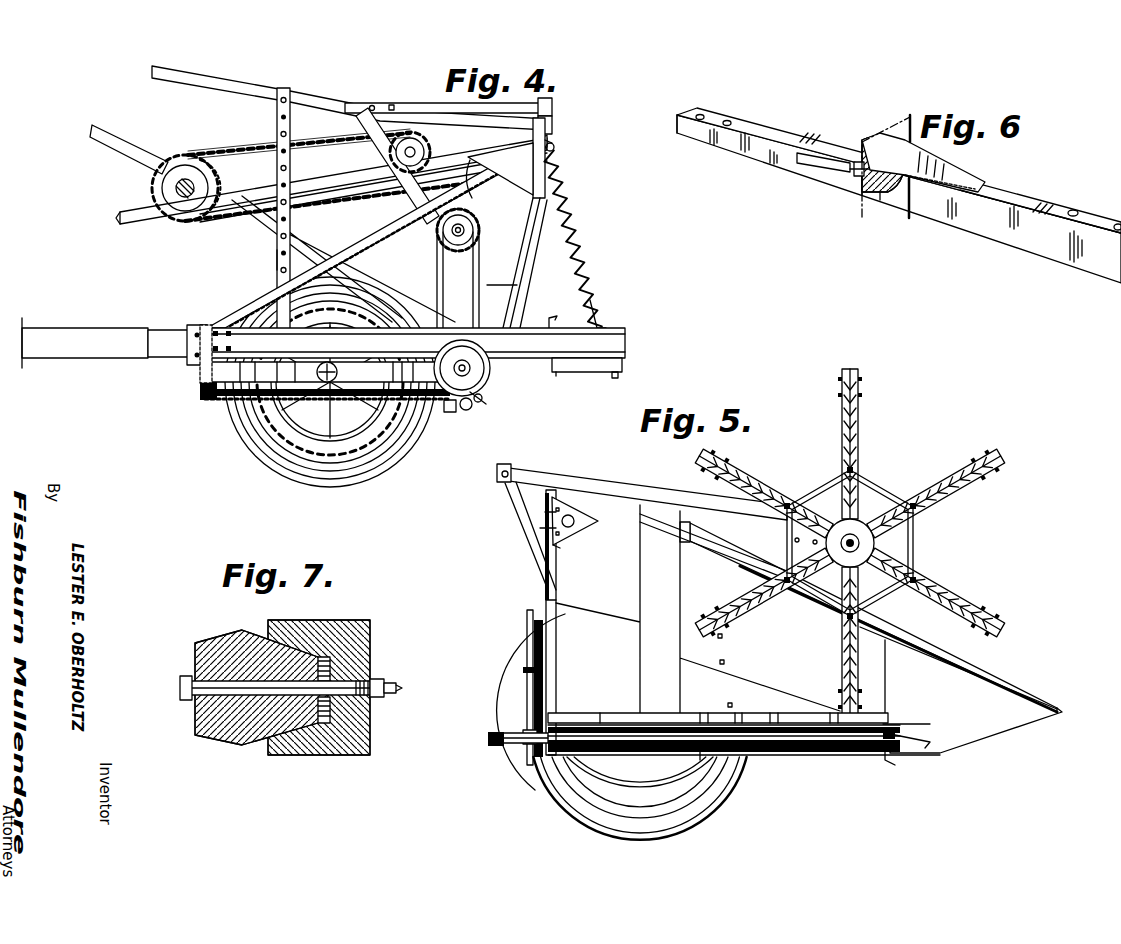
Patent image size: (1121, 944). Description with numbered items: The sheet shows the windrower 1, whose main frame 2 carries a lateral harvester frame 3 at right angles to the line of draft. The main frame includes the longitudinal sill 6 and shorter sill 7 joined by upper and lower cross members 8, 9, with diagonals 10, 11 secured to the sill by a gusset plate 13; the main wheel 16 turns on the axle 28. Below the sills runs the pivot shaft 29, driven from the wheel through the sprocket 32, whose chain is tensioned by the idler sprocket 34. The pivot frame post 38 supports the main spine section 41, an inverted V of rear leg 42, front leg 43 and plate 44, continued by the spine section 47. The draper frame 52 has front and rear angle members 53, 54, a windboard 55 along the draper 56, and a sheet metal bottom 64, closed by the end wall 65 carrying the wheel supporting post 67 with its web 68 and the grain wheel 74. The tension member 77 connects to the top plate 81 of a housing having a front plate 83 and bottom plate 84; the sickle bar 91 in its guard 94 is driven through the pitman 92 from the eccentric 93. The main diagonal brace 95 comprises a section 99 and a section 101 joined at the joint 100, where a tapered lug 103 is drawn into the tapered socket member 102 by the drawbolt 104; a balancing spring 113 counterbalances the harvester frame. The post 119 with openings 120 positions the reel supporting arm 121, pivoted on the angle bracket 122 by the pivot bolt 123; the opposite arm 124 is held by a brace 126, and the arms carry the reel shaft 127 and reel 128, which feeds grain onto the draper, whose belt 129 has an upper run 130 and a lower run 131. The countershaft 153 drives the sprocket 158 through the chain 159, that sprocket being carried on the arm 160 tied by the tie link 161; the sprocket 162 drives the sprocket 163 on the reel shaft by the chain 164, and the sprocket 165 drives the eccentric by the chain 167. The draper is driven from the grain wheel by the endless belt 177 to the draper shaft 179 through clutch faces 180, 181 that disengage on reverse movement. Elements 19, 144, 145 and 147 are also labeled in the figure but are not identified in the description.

In FIG. 4, the windrower 1 is at (277, 258).
In FIG. 4, the main frame 2 is at (503, 312).
In FIG. 4, the lateral harvester frame 3 is at (545, 150).
In FIG. 5, the lateral harvester frame 3 is at (546, 500).
In FIG. 4, the longitudinal sill 6 is at (158, 358).
In FIG. 6, the shorter sill 7 is at (860, 238).
In FIG. 4, the upper cross member 8 is at (548, 326).
In FIG. 4, the lower cross member 9 is at (552, 366).
In FIG. 4, the diagonal 10 is at (570, 368).
In FIG. 4, the diagonal 11 is at (338, 312).
In FIG. 4, the gusset plate 13 is at (190, 326).
In FIG. 4, the main wheel 16 is at (236, 432).
In FIG. 4, the tongue 19 is at (92, 357).
In FIG. 4, the axle 28 is at (350, 370).
In FIG. 4, the pivot shaft 29 is at (490, 372).
In FIG. 4, the sprocket 32 is at (333, 420).
In FIG. 4, the idler sprocket 34 is at (458, 402).
In FIG. 4, the post member 38 is at (520, 278).
In FIG. 4, the main spine section 41 is at (552, 152).
In FIG. 4, the rear leg 42 is at (556, 186).
In FIG. 5, the rear leg 42 is at (540, 530).
In FIG. 4, the front leg 43 is at (500, 169).
In FIG. 5, the front leg 43 is at (592, 518).
In FIG. 4, the plate 44 is at (472, 200).
In FIG. 5, the plate 44 is at (558, 546).
In FIG. 5, the continuing spine section 47 is at (545, 515).
In FIG. 5, the draper frame 52 is at (815, 755).
In FIG. 5, the front angle member 53 is at (888, 757).
In FIG. 5, the rear angle member 54 is at (535, 770).
In FIG. 5, the windboard 55 is at (546, 600).
In FIG. 5, the draper 56 is at (775, 725).
In FIG. 5, the sheet metal bottom 64 is at (740, 760).
In FIG. 5, the end wall 65 is at (630, 674).
In FIG. 5, the wheel supporting post 67 is at (600, 712).
In FIG. 5, the web 68 is at (922, 642).
In FIG. 5, the grain wheel 74 is at (720, 800).
In FIG. 4, the tension member 77 is at (380, 235).
In FIG. 4, the top plate 81 is at (238, 300).
In FIG. 4, the front plate 83 is at (200, 390).
In FIG. 4, the bottom plate 84 is at (215, 400).
In FIG. 5, the sickle bar 91 is at (915, 725).
In FIG. 4, the pitman 92 is at (475, 410).
In FIG. 4, the eccentric 93 is at (490, 395).
In FIG. 5, the guard 94 is at (915, 738).
In FIG. 6, the main diagonal brace 95 is at (940, 226).
In FIG. 6, the brace section 99 is at (750, 160).
In FIG. 6, the joint 100 is at (880, 202).
In FIG. 6, the brace section 101 is at (1030, 245).
In FIG. 6, the tapered socket member 102 is at (935, 160).
In FIG. 7, the tapered socket member 102 is at (360, 620).
In FIG. 6, the tapered lug 103 is at (858, 188).
In FIG. 7, the tapered lug 103 is at (250, 632).
In FIG. 6, the drawbolt 104 is at (852, 172).
In FIG. 7, the drawbolt 104 is at (402, 686).
In FIG. 4, the balancing spring 113 is at (597, 300).
In FIG. 4, the post 119 is at (277, 127).
In FIG. 4, the openings 120 is at (277, 175).
In FIG. 4, the reel supporting arm 121 is at (120, 226).
In FIG. 4, the angle bracket 122 is at (553, 110).
In FIG. 4, the pivot bolt 123 is at (553, 128).
In FIG. 5, the arm 124 is at (640, 500).
In FIG. 5, the brace 126 is at (505, 493).
In FIG. 4, the reel shaft 127 is at (213, 183).
In FIG. 5, the reel shaft 127 is at (858, 548).
In FIG. 5, the reel 128 is at (917, 510).
In FIG. 5, the belt 129 is at (700, 713).
In FIG. 5, the upper run 130 is at (820, 727).
In FIG. 5, the lower run 131 is at (785, 760).
In FIG. 4, the bar 144 is at (232, 88).
In FIG. 4, the bar 145 is at (128, 146).
In FIG. 4, the chain 147 is at (360, 196).
In FIG. 4, the countershaft 153 is at (520, 245).
In FIG. 4, the sprocket 158 is at (390, 155).
In FIG. 4, the chain 159 is at (437, 238).
In FIG. 4, the arm 160 is at (370, 132).
In FIG. 4, the tie link 161 is at (398, 108).
In FIG. 4, the sprocket 162 is at (350, 168).
In FIG. 4, the sprocket 163 is at (160, 188).
In FIG. 4, the chain 164 is at (240, 150).
In FIG. 4, the sprocket 165 is at (478, 236).
In FIG. 4, the chain 167 is at (518, 288).
In FIG. 5, the endless belt 177 is at (548, 648).
In FIG. 5, the draper shaft 179 is at (535, 718).
In FIG. 5, the clutch face 180 is at (530, 735).
In FIG. 5, the clutch face 181 is at (500, 745).